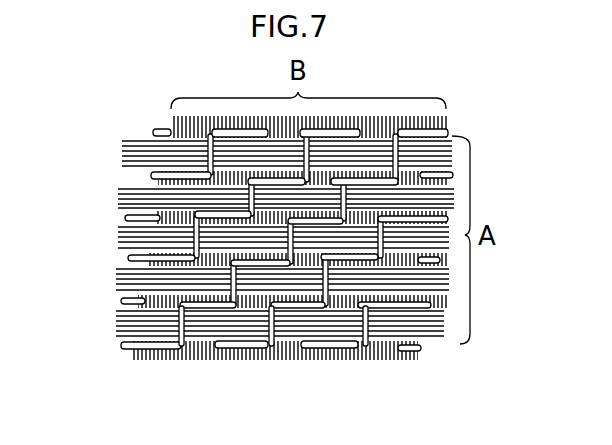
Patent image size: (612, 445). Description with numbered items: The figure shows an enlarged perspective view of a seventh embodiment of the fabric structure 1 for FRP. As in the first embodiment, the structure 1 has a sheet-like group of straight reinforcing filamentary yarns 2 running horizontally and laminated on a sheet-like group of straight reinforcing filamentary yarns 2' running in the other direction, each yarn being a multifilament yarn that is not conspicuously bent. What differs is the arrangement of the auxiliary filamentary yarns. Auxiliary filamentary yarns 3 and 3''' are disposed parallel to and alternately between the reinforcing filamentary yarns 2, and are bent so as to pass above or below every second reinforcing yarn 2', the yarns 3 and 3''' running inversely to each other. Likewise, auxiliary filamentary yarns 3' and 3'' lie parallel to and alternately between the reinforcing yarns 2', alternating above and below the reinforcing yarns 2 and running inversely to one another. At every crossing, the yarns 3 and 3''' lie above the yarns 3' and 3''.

The fabric structure 1 is at (130, 116).
The reinforcing filamentary yarns 2 is at (304, 222).
The reinforcing filamentary yarns 2' is at (307, 221).
The auxiliary filamentary yarns 3 is at (135, 299).
The auxiliary filamentary yarns 3' is at (265, 355).
The auxiliary filamentary yarns 3'' is at (284, 372).
The auxiliary filamentary yarns 3''' is at (116, 259).